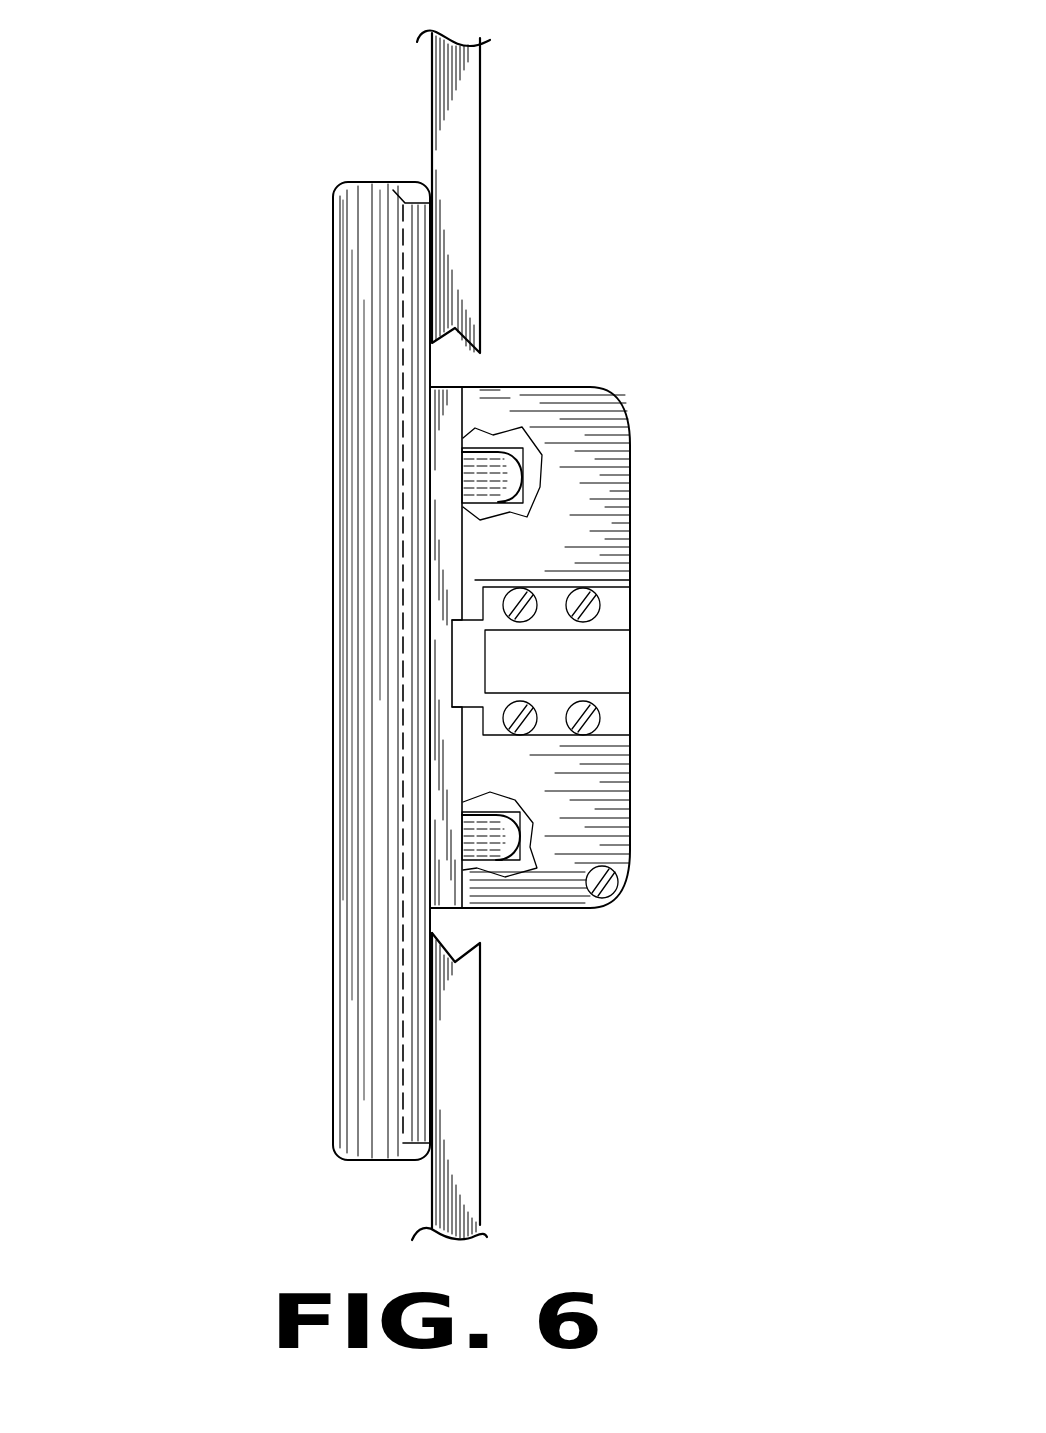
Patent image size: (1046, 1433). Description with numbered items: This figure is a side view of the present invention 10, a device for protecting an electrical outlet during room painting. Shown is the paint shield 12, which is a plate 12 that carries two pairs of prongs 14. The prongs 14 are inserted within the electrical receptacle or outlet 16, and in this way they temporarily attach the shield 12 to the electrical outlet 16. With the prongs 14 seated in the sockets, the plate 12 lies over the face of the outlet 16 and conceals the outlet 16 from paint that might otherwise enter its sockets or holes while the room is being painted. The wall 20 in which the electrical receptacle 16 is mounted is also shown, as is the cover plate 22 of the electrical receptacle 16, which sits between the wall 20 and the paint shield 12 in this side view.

The present invention 10 is at (330, 912).
The paint shield 12 is at (333, 449).
The prongs 14 is at (513, 835).
The electrical receptacle or outlet 16 is at (632, 436).
The wall 20 is at (432, 99).
The cover plate 22 is at (397, 195).